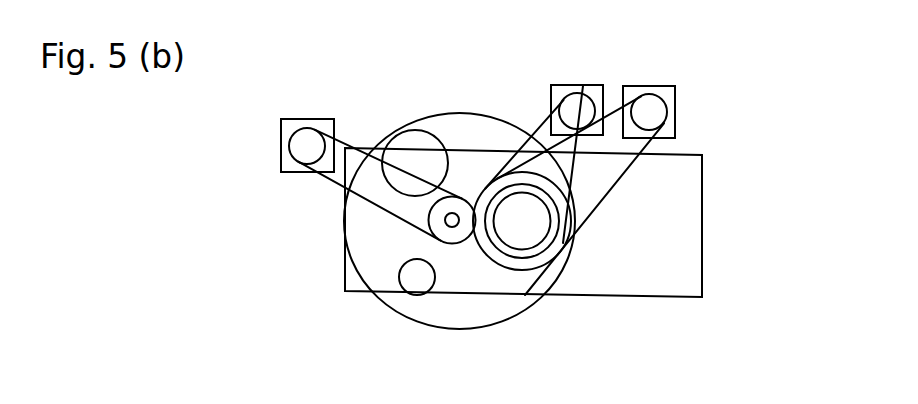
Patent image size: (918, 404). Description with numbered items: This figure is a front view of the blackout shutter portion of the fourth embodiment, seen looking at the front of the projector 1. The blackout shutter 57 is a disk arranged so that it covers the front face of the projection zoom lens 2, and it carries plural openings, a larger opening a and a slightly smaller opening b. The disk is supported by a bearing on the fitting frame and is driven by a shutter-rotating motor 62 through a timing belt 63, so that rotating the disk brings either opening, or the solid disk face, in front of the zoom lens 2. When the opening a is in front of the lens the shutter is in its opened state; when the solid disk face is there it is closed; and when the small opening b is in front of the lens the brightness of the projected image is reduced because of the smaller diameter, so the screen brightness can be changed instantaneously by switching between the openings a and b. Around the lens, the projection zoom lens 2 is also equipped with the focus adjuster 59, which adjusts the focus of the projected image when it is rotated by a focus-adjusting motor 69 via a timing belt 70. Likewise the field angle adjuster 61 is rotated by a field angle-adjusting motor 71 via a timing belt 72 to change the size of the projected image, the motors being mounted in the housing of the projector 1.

The projector 1 is at (688, 251).
The projection zoom lens 2 is at (513, 217).
The blackout shutter 57 is at (441, 318).
The focus adjuster 59 is at (520, 250).
The field angle adjuster 61 is at (565, 243).
The shutter-rotating motor 62 is at (302, 125).
The timing belt 63 is at (380, 204).
The focus-adjusting motor 69 is at (583, 86).
The timing belt 70 is at (544, 168).
The field angle-adjusting motor 71 is at (668, 99).
The timing belt 72 is at (627, 172).
The opening a is at (412, 160).
The opening b is at (413, 280).